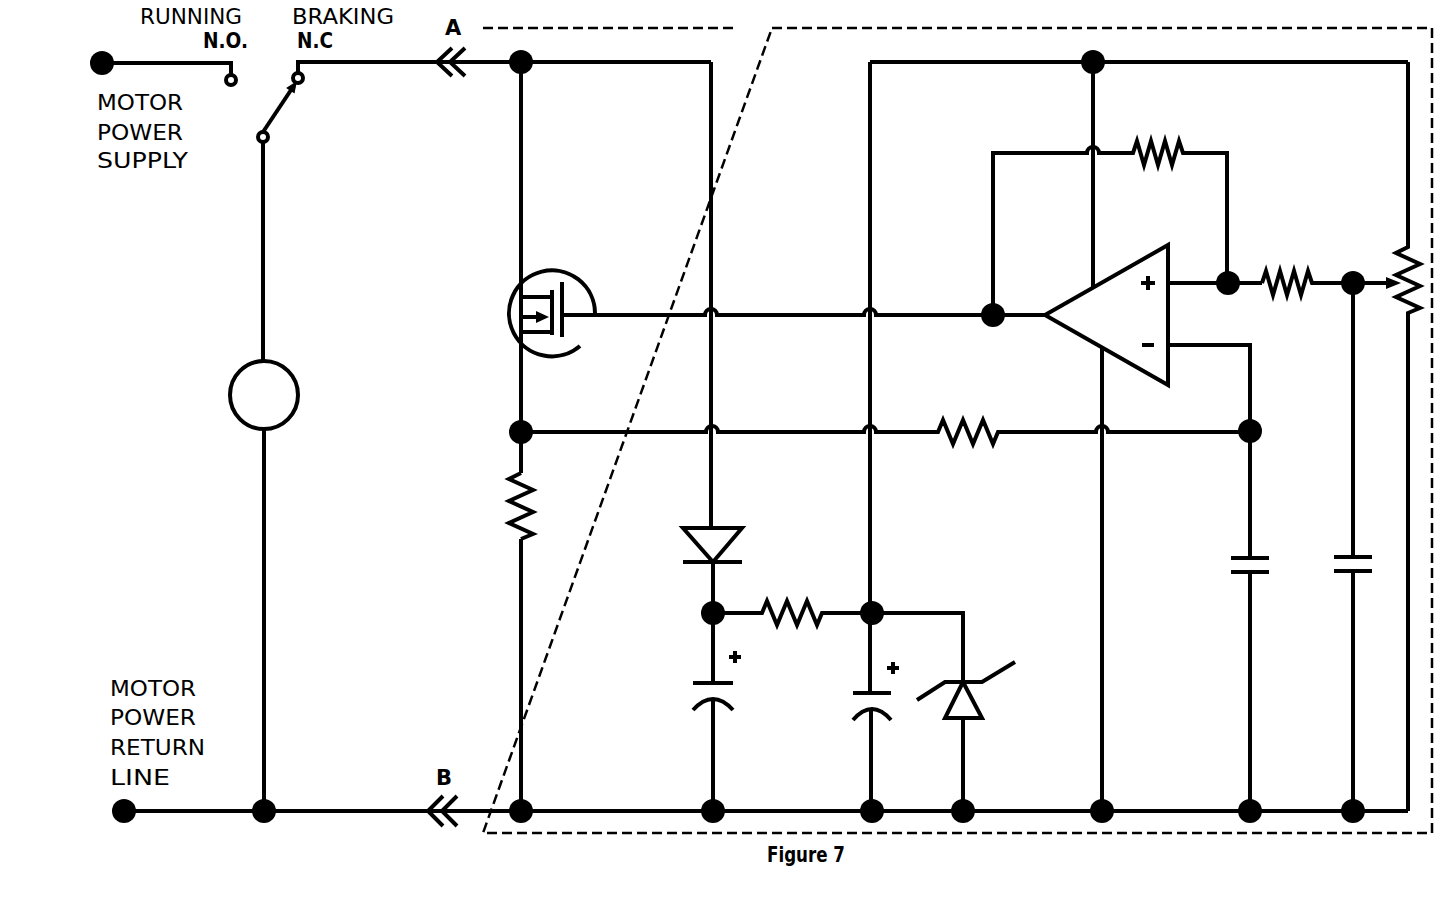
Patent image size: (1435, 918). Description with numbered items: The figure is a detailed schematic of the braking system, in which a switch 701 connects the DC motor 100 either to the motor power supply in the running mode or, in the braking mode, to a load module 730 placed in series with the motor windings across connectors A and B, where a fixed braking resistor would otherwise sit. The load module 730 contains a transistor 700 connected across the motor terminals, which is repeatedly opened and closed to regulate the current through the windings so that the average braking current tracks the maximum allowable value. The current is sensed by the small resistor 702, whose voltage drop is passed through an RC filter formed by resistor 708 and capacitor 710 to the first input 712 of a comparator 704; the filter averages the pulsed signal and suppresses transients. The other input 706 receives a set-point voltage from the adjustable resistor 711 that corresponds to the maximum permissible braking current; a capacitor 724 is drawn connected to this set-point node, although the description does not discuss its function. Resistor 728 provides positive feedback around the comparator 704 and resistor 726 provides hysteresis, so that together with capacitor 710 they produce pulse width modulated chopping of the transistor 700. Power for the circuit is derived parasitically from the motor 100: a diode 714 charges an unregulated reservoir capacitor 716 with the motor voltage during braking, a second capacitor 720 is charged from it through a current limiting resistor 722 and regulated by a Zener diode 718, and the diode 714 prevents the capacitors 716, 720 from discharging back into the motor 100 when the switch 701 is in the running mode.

The DC motor 100 is at (329, 476).
The switch 701 is at (319, 119).
The load module 730 is at (957, 425).
The transistor 700 is at (777, 306).
The resistor 702 is at (541, 506).
The comparator 704 is at (1074, 315).
The other input of the comparator 706 is at (1215, 289).
The first input of the comparator 712 is at (1209, 372).
The resistor 708 is at (885, 445).
The capacitor 710 is at (1236, 621).
The adjustable resistor 711 is at (1386, 436).
The diode 714 is at (689, 570).
The capacitor 716 is at (697, 712).
The Zener diode 718 is at (943, 712).
The second capacitor 720 is at (863, 736).
The current limiting resistor 722 is at (792, 595).
The capacitor 724 is at (1342, 547).
The resistor 726 is at (1307, 268).
The resistor 728 is at (1110, 211).